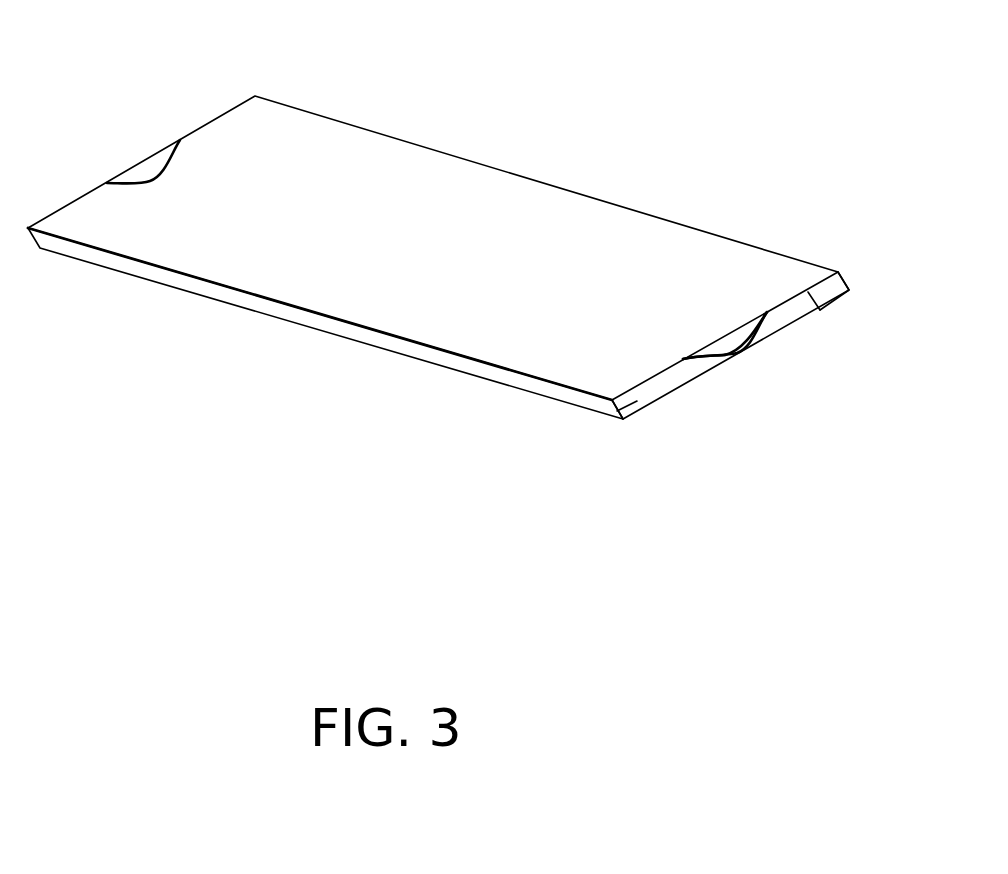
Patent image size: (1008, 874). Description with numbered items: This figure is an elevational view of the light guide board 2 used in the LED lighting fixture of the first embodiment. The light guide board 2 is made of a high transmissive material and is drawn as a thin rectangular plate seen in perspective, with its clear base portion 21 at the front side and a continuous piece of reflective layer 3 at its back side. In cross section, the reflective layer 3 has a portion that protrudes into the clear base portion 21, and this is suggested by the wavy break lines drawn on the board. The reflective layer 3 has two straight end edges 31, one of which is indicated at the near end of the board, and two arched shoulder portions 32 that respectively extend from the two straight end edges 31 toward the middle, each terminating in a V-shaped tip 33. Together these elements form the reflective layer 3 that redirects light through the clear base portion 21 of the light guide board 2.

The light guide board 2 is at (549, 182).
The reflective layer 3 is at (123, 223).
The clear base portion 21 is at (615, 420).
The straight end edges 31 is at (820, 310).
The arched shoulder portions 32 is at (690, 358).
The V-shaped tip 33 is at (737, 353).